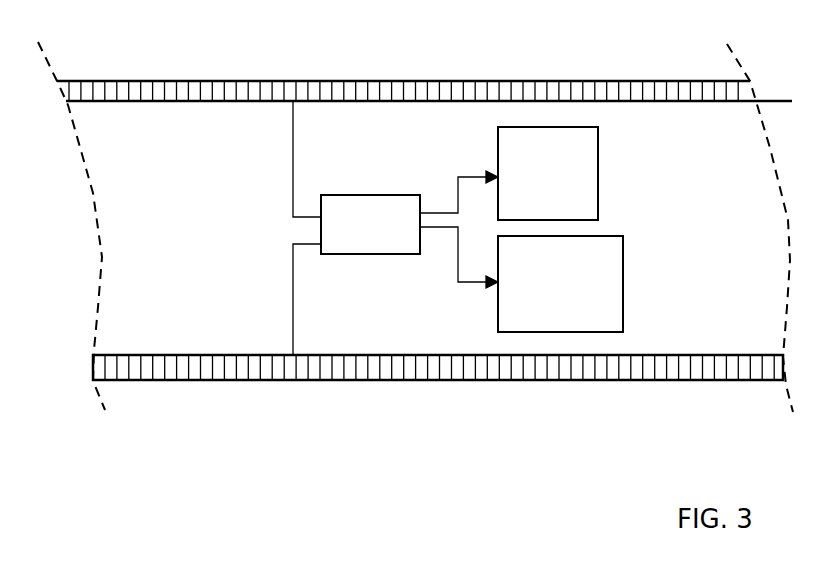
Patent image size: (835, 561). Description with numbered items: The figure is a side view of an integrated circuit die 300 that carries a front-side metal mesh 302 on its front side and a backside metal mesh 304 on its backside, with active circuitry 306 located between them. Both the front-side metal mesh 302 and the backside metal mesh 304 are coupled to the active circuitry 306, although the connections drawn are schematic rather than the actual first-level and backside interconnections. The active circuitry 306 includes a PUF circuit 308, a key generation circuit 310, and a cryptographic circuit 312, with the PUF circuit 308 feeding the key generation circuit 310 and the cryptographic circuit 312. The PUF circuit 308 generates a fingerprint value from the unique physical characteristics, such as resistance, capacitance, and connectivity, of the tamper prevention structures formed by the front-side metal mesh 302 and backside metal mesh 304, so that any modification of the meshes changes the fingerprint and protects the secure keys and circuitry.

The integrated circuit die 300 is at (145, 244).
The front-side metal mesh 302 is at (316, 370).
The backside metal mesh 304 is at (172, 81).
The active circuitry 306 is at (367, 128).
The PUF circuit 308 is at (355, 244).
The key generation circuit 310 is at (533, 208).
The cryptographic circuit 312 is at (546, 306).